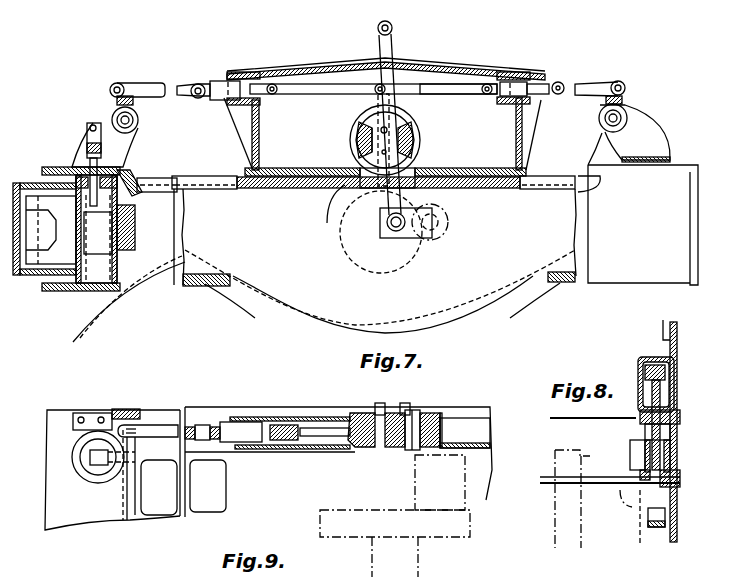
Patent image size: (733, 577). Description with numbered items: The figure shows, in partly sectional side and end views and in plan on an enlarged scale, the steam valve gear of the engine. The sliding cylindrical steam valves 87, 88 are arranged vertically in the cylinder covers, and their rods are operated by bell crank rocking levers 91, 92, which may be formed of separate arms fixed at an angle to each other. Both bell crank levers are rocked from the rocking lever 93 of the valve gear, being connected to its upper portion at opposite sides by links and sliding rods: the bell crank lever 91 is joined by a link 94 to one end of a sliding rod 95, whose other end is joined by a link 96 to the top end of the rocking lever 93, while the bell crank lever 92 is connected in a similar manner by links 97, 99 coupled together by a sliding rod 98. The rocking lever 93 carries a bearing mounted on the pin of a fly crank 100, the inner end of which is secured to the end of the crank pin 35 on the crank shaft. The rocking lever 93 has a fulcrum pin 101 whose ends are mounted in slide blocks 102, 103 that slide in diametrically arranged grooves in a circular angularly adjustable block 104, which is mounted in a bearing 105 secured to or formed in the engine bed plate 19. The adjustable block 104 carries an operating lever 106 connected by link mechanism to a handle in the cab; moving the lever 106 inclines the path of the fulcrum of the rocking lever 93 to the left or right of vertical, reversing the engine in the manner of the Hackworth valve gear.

In FIG. 7, the bed plate 19 is at (127, 181).
In FIG. 7, the crank 35 is at (450, 223).
In FIG. 9, the crank 35 is at (457, 472).
In FIG. 8, the crank 35 is at (596, 495).
In FIG. 9, the steam valve 87 is at (92, 474).
In FIG. 7, the steam valve 88 is at (112, 240).
In FIG. 7, the bell crank rocking lever 91 is at (113, 106).
In FIG. 7, the bell crank rocking lever 92 is at (622, 99).
In FIG. 7, the rocking lever 93 is at (377, 99).
In FIG. 9, the rocking lever 93 is at (411, 451).
In FIG. 8, the rocking lever 93 is at (661, 392).
In FIG. 7, the link 94 is at (139, 87).
In FIG. 9, the link 94 is at (153, 426).
In FIG. 7, the sliding rod 95 is at (217, 84).
In FIG. 9, the sliding rod 95 is at (228, 422).
In FIG. 7, the link 96 is at (296, 94).
In FIG. 9, the link 96 is at (316, 428).
In FIG. 8, the link 96 is at (647, 386).
In FIG. 7, the link 97 is at (585, 88).
In FIG. 7, the sliding rod 98 is at (518, 95).
In FIG. 7, the link 99 is at (434, 94).
In FIG. 8, the link 99 is at (671, 372).
In FIG. 7, the fly crank 100 is at (421, 236).
In FIG. 9, the fly crank 100 is at (420, 447).
In FIG. 8, the fly crank 100 is at (650, 518).
In FIG. 7, the fulcrum pin 101 is at (413, 140).
In FIG. 9, the fulcrum pin 101 is at (428, 412).
In FIG. 8, the fulcrum pin 101 is at (671, 432).
In FIG. 8, the slide block 102 is at (672, 448).
In FIG. 7, the slide block 103 is at (371, 148).
In FIG. 9, the slide block 103 is at (417, 452).
In FIG. 8, the slide block 103 is at (648, 446).
In FIG. 7, the angularly adjustable block 104 is at (405, 131).
In FIG. 9, the angularly adjustable block 104 is at (392, 447).
In FIG. 8, the angularly adjustable block 104 is at (681, 467).
In FIG. 7, the bearing 105 is at (358, 138).
In FIG. 9, the bearing 105 is at (362, 448).
In FIG. 8, the bearing 105 is at (680, 416).
In FIG. 7, the operating lever 106 is at (391, 48).
In FIG. 9, the operating lever 106 is at (389, 406).
In FIG. 8, the operating lever 106 is at (677, 328).